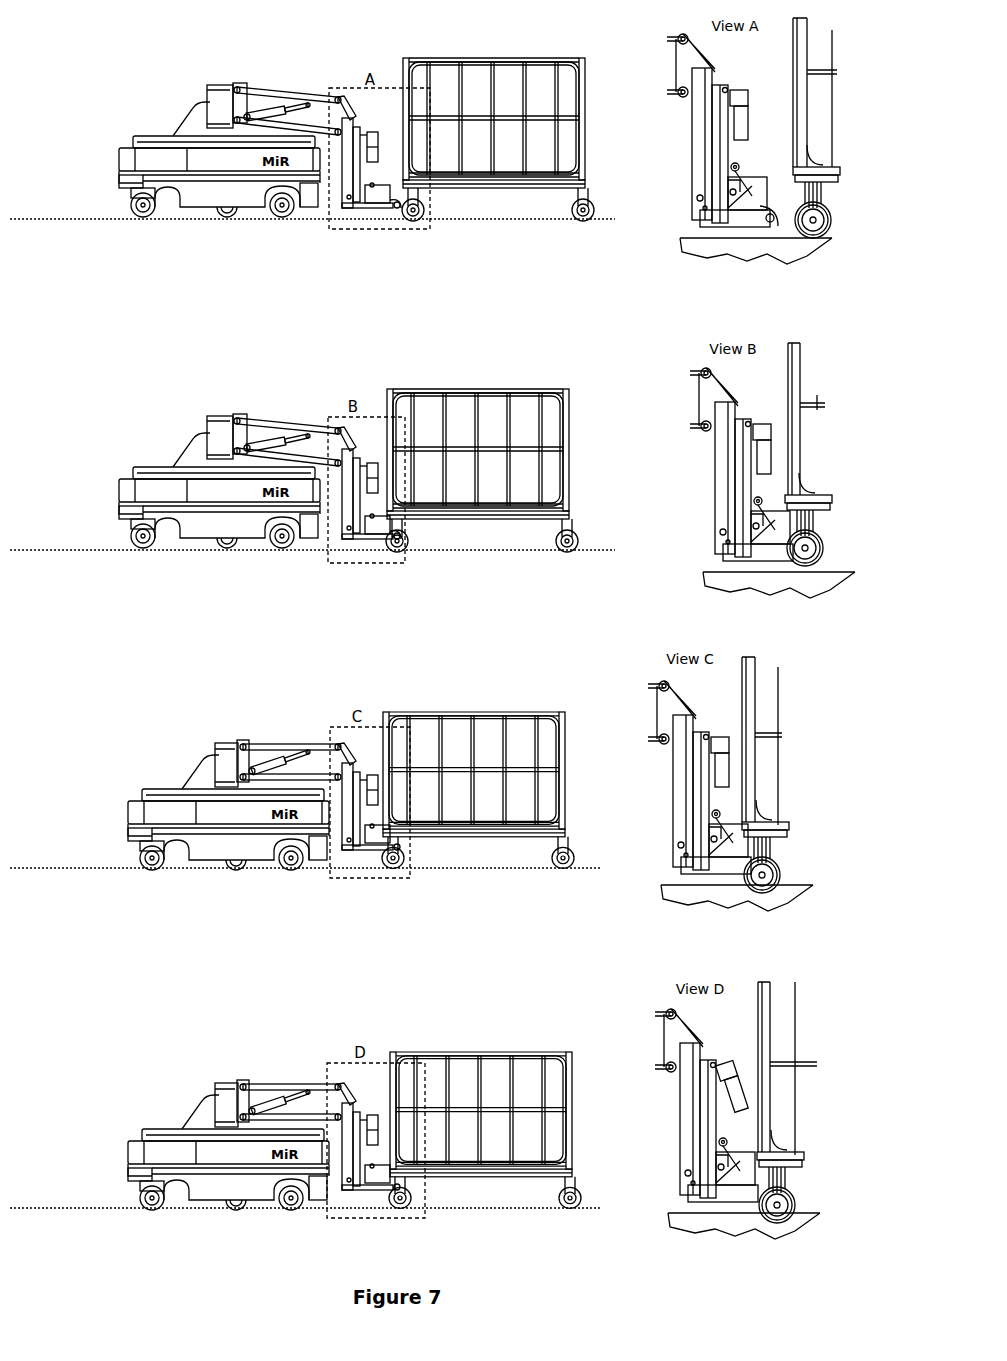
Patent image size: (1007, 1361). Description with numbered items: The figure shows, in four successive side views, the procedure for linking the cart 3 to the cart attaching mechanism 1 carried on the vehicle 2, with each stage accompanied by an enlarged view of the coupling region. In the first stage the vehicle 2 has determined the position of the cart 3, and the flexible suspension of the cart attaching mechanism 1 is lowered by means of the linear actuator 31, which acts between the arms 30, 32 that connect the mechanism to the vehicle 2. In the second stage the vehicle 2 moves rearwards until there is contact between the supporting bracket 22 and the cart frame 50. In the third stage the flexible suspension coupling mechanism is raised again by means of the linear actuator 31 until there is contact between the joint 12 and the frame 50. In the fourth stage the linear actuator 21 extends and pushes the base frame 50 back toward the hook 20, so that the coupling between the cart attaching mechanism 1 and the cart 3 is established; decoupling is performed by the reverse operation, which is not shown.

The cart attaching mechanism 1 is at (186, 124).
The vehicle 2 is at (135, 137).
The cart 3 is at (456, 59).
The joint 12 is at (764, 190).
The hook 20 is at (778, 212).
The linear actuator 21 is at (745, 95).
The supporting bracket 22 is at (758, 180).
The upper arm 30 is at (290, 93).
The linear actuator 31 is at (296, 107).
The lower arm 32 is at (319, 127).
The cart frame 50 is at (835, 180).